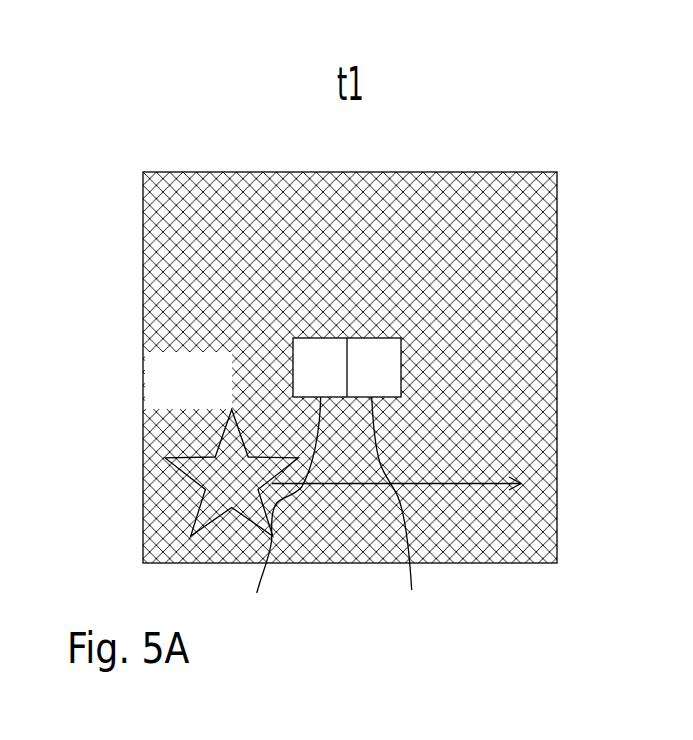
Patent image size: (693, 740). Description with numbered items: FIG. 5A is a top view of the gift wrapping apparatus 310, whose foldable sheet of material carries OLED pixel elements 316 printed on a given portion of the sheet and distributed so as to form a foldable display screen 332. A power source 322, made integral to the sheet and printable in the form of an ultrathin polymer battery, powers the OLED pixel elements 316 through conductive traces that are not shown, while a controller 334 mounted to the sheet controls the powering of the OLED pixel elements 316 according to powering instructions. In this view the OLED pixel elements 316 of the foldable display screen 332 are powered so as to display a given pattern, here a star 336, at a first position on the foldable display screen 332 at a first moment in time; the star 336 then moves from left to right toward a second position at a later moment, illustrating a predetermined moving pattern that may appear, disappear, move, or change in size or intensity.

The gift wrapping apparatus 310 is at (365, 324).
The OLED pixel elements 316 is at (490, 197).
The foldable display screen 332 is at (552, 227).
The star 336 is at (202, 455).
The power source 322 is at (365, 485).
The controller 334 is at (377, 519).